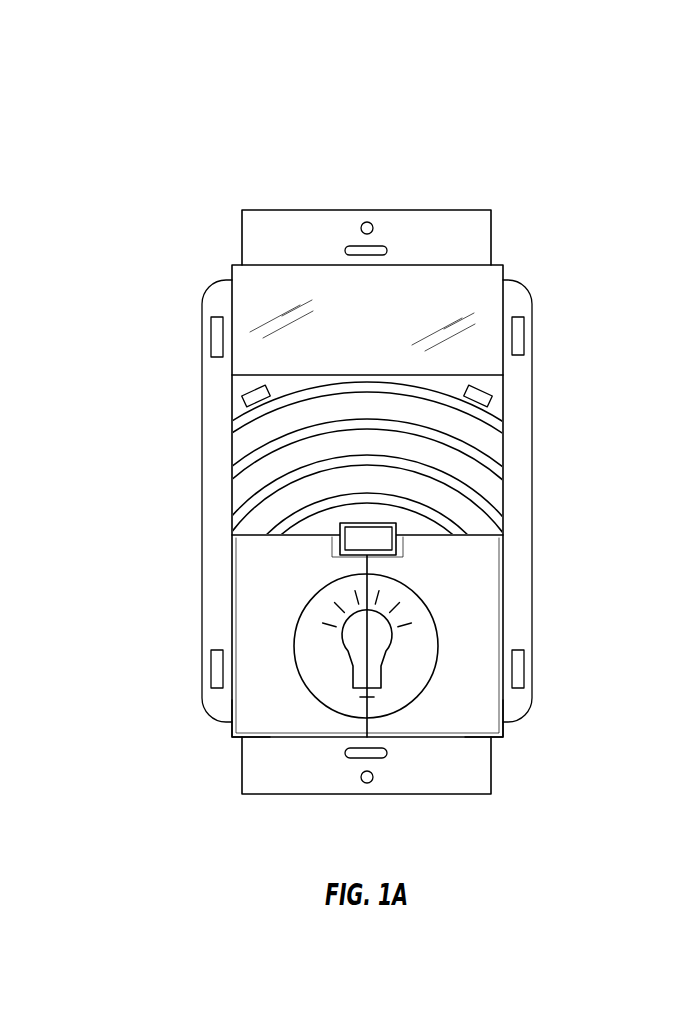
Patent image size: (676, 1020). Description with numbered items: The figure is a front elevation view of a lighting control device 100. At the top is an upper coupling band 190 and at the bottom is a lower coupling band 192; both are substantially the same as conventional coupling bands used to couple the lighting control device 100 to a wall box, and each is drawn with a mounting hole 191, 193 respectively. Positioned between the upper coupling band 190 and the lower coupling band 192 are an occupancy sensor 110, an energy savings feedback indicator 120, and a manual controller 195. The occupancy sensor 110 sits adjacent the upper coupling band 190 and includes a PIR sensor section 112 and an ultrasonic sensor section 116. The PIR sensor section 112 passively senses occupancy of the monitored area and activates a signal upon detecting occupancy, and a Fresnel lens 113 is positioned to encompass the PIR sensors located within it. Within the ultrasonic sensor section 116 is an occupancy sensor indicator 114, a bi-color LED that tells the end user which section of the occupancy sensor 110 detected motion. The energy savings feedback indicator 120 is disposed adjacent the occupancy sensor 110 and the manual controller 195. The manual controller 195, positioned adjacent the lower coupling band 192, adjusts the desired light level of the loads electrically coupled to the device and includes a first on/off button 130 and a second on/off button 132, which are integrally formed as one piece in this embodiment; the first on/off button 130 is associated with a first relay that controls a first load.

The lighting control device 100 is at (179, 210).
The occupancy sensor 110 is at (193, 268).
The PIR sensor section 112 is at (480, 278).
The Fresnel lens 113 is at (497, 313).
The occupancy sensor indicator 114 is at (258, 390).
The ultrasonic sensor section 116 is at (493, 447).
The energy savings feedback indicator 120 is at (397, 555).
The first on/off button 130 is at (240, 727).
The second on/off button 132 is at (490, 727).
The upper coupling band 190 is at (440, 218).
The upper mounting hole 191 is at (366, 221).
The lower coupling band 192 is at (432, 782).
The lower mounting hole 193 is at (365, 784).
The manual controller 195 is at (254, 601).